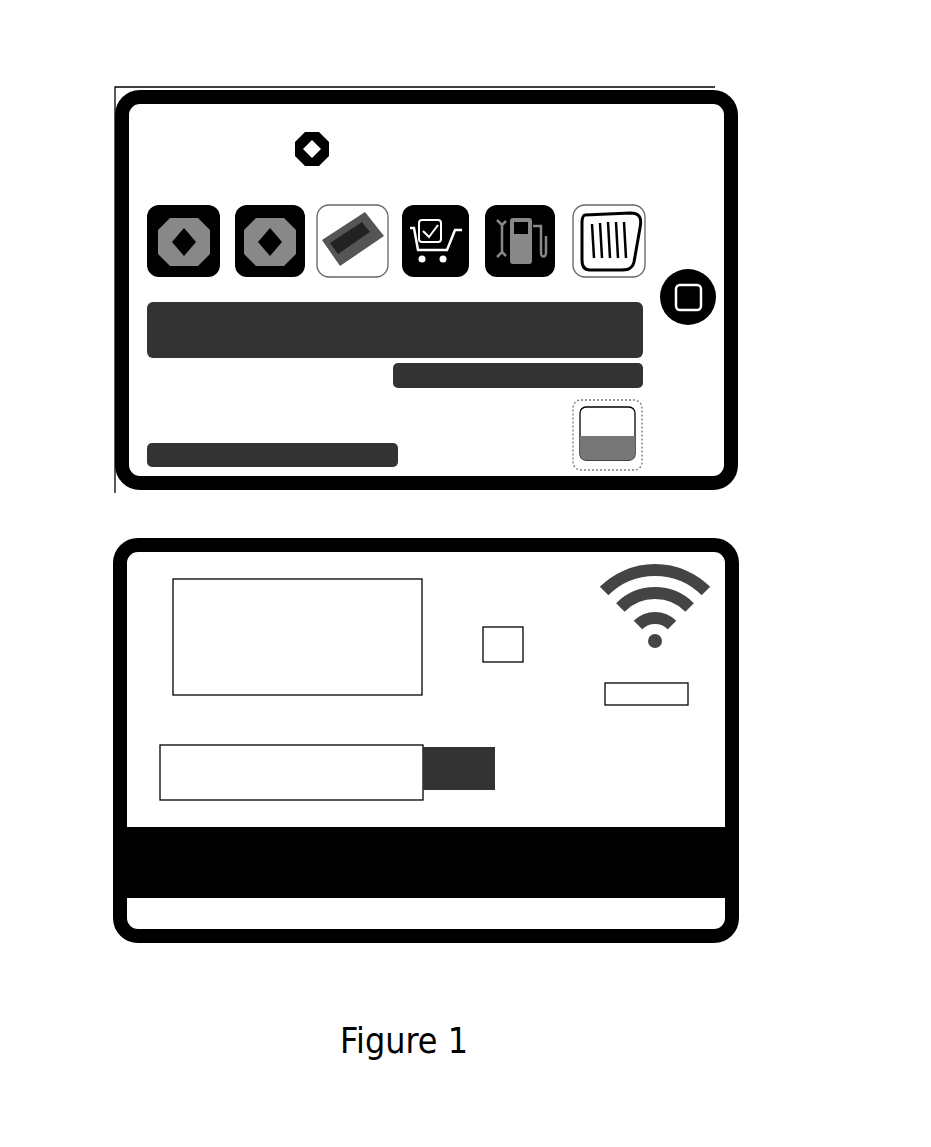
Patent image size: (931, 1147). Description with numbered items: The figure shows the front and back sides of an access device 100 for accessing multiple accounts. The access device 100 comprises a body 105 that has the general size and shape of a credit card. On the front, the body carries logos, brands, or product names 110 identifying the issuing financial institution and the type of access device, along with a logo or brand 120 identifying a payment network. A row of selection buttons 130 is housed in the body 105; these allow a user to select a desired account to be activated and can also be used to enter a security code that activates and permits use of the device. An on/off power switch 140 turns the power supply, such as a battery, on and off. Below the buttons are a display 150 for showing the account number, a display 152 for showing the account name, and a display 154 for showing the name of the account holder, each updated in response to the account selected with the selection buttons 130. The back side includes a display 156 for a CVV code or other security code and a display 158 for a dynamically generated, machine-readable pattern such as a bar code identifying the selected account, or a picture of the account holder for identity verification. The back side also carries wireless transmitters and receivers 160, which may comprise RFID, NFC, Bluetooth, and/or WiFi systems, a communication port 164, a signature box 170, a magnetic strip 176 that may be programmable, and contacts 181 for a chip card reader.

The access device 100 is at (335, 62).
The body 105 is at (692, 138).
The logos, brands, or product names 110 is at (257, 133).
The logos or brands identifying a payment network 120 is at (635, 432).
The selection buttons 130 is at (350, 200).
The on/off power switch 140 is at (716, 270).
The display for displaying an account number 150 is at (143, 303).
The display for displaying an account name 152 is at (636, 374).
The display for displaying the name of the account holder 154 is at (197, 443).
The display for displaying a CVV code 156 is at (495, 757).
The display for displaying a machine-readable pattern 158 is at (173, 640).
The wireless transmitters and receivers 160 is at (690, 613).
The communication port 164 is at (688, 690).
The signature box 170 is at (160, 780).
The magnetic strip 176 is at (622, 902).
The contacts for a chip card reader 181 is at (503, 627).